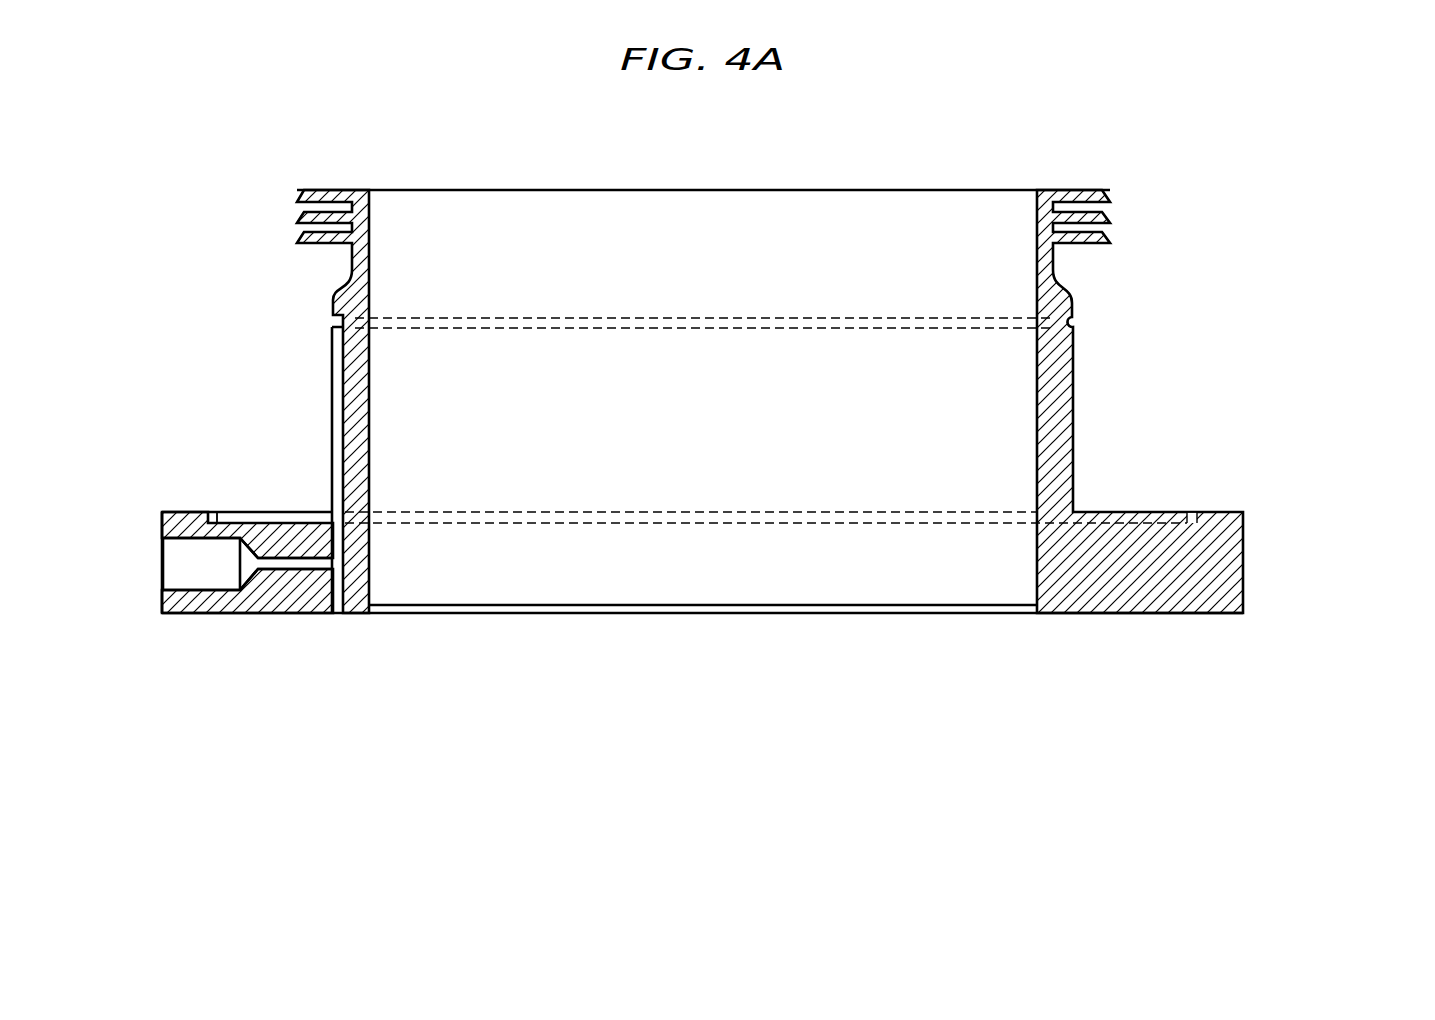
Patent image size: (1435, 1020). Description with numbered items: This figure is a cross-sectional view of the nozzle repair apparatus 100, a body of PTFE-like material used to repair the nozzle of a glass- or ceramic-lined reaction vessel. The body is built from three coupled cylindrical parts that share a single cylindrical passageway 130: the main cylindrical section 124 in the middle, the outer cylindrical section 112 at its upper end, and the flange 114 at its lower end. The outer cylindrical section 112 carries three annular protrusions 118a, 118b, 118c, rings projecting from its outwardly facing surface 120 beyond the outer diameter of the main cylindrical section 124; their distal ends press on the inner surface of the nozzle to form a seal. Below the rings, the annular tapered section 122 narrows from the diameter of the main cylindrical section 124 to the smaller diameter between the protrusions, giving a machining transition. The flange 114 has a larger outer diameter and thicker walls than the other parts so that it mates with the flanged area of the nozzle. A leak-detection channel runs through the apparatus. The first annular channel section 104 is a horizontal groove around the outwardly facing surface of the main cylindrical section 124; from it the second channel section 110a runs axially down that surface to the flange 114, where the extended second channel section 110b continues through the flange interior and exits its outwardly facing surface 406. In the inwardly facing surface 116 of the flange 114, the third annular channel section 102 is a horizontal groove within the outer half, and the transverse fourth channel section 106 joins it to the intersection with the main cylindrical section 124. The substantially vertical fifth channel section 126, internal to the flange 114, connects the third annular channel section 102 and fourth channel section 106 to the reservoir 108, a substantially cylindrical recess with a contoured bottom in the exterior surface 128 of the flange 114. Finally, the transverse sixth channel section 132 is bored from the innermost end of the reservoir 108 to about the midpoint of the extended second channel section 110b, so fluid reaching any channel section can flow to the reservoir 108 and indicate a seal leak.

The nozzle repair apparatus 100 is at (945, 62).
The third annular channel section 102 is at (212, 512).
The first annular channel section 104 is at (1069, 324).
The fourth channel section 106 is at (282, 518).
The reservoir 108 is at (180, 558).
The second channel section 110a is at (333, 376).
The extended second channel section 110b is at (337, 613).
The outer cylindrical section 112 is at (1152, 211).
The flange 114 is at (1270, 570).
The inwardly facing surface 116 is at (1225, 512).
The annular protrusion 118a is at (297, 196).
The annular protrusion 118b is at (297, 218).
The annular protrusion 118c is at (297, 237).
The outwardly facing surface 120 is at (1055, 263).
The annular tapered section 122 is at (1070, 299).
The main cylindrical section 124 is at (1180, 385).
The fifth channel section 126 is at (165, 514).
The exterior surface 128 is at (1245, 536).
The cylindrical passageway 130 is at (710, 596).
The sixth channel section 132 is at (273, 565).
The outwardly facing surface 406 is at (1104, 613).